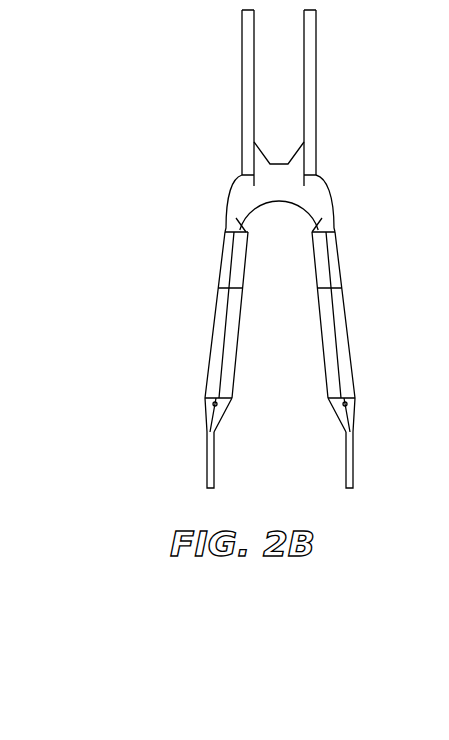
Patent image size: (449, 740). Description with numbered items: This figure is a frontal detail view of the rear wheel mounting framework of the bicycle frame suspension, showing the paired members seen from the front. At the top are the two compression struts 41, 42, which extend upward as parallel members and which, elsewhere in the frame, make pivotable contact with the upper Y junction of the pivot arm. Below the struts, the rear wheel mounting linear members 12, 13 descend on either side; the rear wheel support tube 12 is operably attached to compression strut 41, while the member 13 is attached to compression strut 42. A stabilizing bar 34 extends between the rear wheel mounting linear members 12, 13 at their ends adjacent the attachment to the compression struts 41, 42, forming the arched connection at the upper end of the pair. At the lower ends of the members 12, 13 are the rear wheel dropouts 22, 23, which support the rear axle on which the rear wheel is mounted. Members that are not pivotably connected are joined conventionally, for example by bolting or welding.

The rear wheel support tube 12 is at (345, 312).
The rear wheel mounting linear member 13 is at (217, 273).
The rear wheel dropout 22 is at (353, 472).
The first jaw tip 23 is at (214, 470).
The stabilizing bar 34 is at (226, 200).
The compression strut 41 is at (316, 102).
The compression strut 42 is at (242, 68).